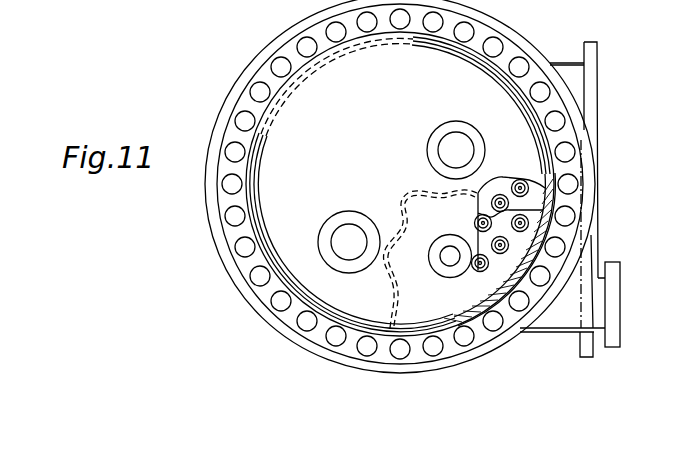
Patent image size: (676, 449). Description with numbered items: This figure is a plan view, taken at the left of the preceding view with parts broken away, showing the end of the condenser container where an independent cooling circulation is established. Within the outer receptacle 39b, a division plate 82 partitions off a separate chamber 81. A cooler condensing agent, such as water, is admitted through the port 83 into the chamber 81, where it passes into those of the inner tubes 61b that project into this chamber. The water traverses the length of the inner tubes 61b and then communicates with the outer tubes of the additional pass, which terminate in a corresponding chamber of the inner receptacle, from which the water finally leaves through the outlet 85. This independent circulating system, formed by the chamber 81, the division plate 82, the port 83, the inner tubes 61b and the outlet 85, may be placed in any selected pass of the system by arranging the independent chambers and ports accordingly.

The outer receptacle 39b is at (260, 300).
The chamber 81 is at (503, 262).
The division plate 82 is at (523, 210).
The inner tubes 61b is at (508, 247).
The port 83 is at (452, 262).
The outlet 85 is at (615, 302).